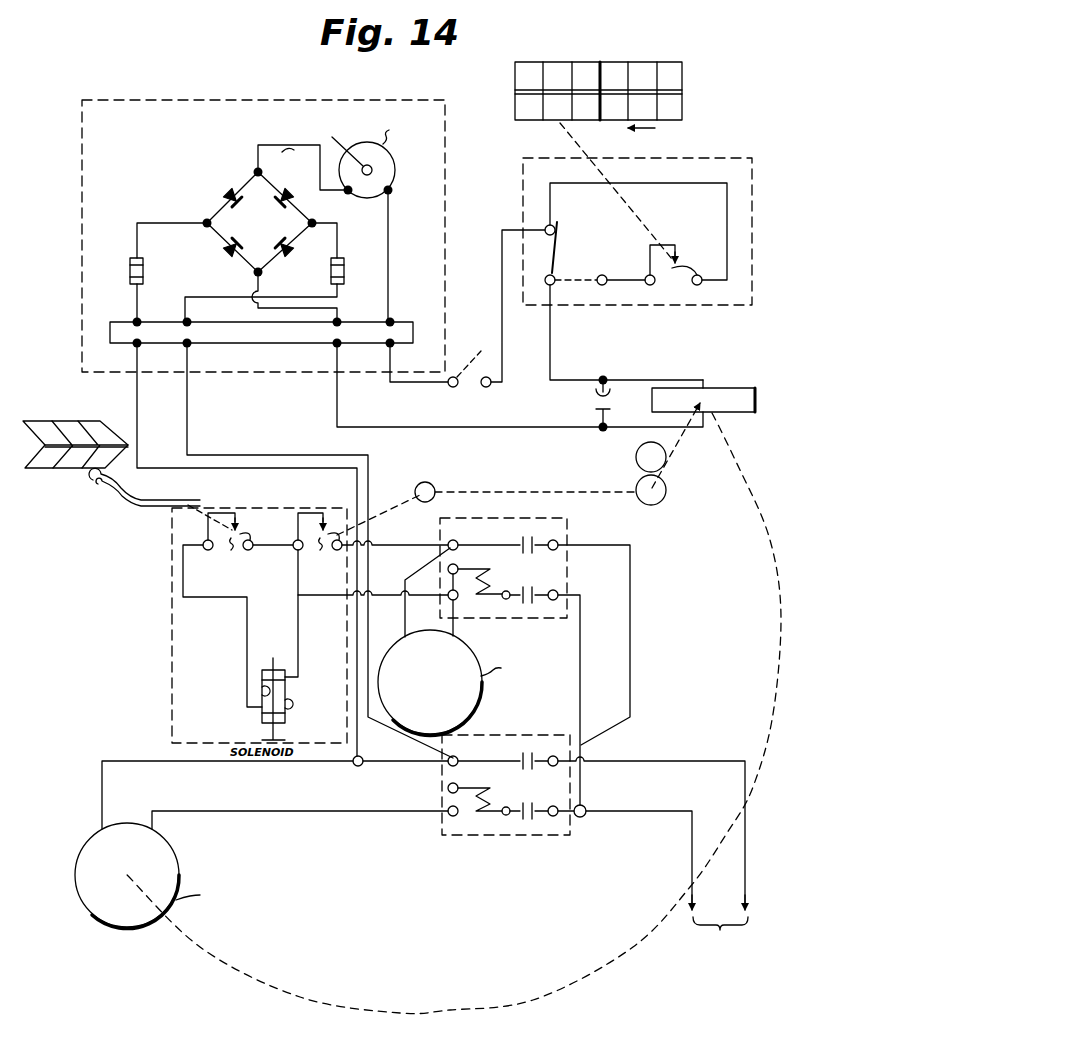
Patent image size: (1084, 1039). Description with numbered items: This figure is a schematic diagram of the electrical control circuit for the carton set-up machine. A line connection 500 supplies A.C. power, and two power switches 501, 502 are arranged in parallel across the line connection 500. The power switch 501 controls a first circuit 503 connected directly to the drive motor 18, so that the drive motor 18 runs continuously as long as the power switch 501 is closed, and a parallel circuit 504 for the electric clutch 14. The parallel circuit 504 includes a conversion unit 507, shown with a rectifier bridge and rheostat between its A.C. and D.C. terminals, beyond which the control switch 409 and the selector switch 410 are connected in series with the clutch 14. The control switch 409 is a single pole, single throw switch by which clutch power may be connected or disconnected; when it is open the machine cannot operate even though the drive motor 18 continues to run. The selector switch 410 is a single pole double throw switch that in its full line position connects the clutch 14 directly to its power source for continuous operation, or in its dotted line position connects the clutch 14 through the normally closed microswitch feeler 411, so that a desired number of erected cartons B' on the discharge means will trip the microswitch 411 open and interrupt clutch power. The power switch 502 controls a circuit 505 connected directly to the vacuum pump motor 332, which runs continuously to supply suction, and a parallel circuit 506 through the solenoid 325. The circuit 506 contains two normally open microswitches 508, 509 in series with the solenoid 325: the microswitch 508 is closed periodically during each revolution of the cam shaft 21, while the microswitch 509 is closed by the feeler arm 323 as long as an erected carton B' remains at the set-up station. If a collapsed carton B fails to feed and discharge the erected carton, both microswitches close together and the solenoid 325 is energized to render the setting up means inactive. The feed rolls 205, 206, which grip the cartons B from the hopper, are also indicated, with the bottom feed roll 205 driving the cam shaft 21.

The conversion unit 507 is at (167, 104).
The control switch 409 is at (466, 395).
The selector switch 410 is at (555, 259).
The microswitch feeler 411 is at (638, 243).
The electric clutch 14 is at (730, 389).
The top feed roll 206 is at (634, 460).
The bottom feed roll 205 is at (640, 502).
The cam shaft 21 is at (432, 486).
The parallel circuit 504 is at (271, 455).
The feeler arm 323 is at (140, 505).
The microswitch 509 is at (220, 538).
The microswitch 508 is at (317, 542).
The circuit 506 is at (403, 545).
The circuit 505 is at (404, 585).
The power switch 502 is at (568, 565).
The vacuum pump motor 332 is at (470, 700).
The solenoid 325 is at (288, 692).
The circuit 503 is at (331, 819).
The power switch 501 is at (513, 840).
The drive motor 18 is at (123, 928).
The line connection 500 is at (722, 932).
The bottle carton B is at (75, 461).
The erected bottle carton B' is at (598, 143).